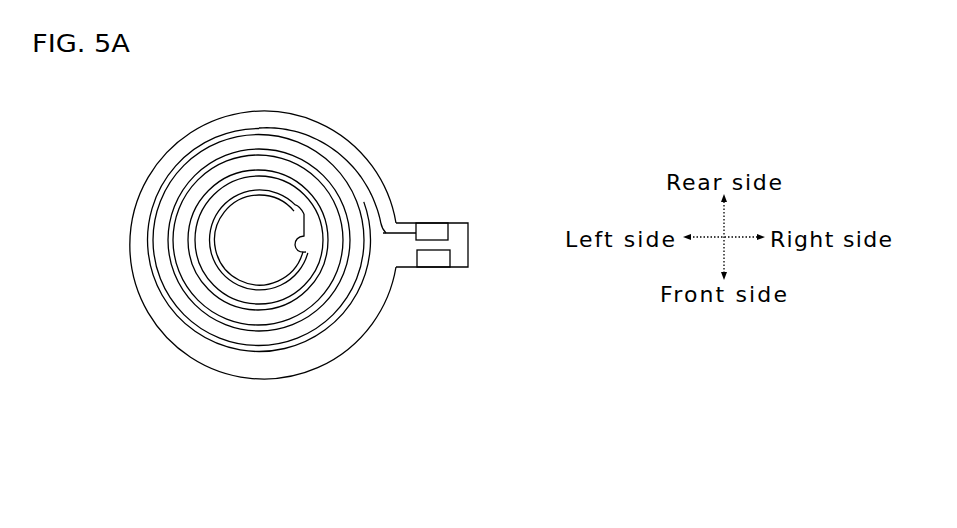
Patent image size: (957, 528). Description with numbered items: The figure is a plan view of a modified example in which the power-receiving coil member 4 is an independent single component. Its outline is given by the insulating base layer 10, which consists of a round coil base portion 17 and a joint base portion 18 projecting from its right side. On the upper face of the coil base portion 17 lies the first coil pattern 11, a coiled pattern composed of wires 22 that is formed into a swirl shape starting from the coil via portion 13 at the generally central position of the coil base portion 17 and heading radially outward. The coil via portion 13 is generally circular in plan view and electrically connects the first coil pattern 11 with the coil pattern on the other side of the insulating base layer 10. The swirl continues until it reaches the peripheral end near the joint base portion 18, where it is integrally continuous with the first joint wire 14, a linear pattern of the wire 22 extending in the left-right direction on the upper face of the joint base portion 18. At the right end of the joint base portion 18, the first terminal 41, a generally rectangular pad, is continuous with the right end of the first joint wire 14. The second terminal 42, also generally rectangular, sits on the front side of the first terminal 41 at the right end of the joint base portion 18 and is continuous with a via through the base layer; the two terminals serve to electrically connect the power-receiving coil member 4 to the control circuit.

The power-receiving coil member 4 is at (289, 473).
The insulating base layer 10 is at (323, 284).
The first coil pattern 11 is at (267, 177).
The coil via portion 13 is at (304, 214).
The first joint wire 14 is at (401, 222).
The coil base portion 17 is at (317, 367).
The joint base portion 18 is at (457, 267).
The wire 22 is at (269, 128).
The first terminal 41 is at (441, 226).
The second terminal 42 is at (434, 268).